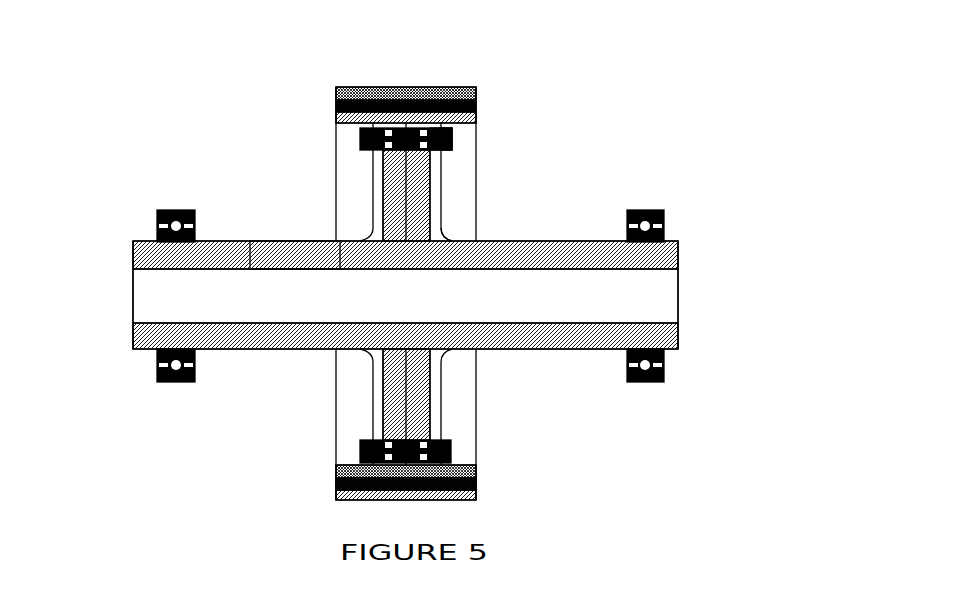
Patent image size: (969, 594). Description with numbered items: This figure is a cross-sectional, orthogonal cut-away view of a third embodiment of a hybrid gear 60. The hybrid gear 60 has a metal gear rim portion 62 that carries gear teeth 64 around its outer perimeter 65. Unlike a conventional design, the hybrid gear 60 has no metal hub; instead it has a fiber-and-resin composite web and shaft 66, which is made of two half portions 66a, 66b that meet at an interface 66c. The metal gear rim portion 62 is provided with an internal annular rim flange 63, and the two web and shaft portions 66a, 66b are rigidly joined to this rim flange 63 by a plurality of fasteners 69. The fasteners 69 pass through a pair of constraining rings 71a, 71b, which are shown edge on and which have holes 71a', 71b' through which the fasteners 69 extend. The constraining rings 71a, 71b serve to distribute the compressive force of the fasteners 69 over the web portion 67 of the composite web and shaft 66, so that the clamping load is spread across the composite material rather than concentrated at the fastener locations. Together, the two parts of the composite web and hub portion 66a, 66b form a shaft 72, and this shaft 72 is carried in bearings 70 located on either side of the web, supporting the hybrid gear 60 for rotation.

The hybrid gear 60 is at (372, 67).
The metal gear rim portion 62 is at (475, 118).
The internal annular rim flange 63 is at (390, 143).
The gear teeth 64 is at (440, 85).
The outer perimeter 65 is at (477, 380).
The composite web and shaft 66 is at (395, 240).
The web and shaft half portion 66a is at (132, 254).
The web and shaft half portion 66b is at (678, 270).
The interface 66c is at (447, 241).
The web portion 67 is at (417, 397).
The fasteners 69 is at (453, 137).
The bearings 70 is at (157, 212).
The constraining ring 71a is at (352, 130).
The constraining ring 71b is at (484, 158).
The holes 71a' is at (364, 489).
The holes 71b' is at (445, 499).
The shaft 72 is at (287, 250).